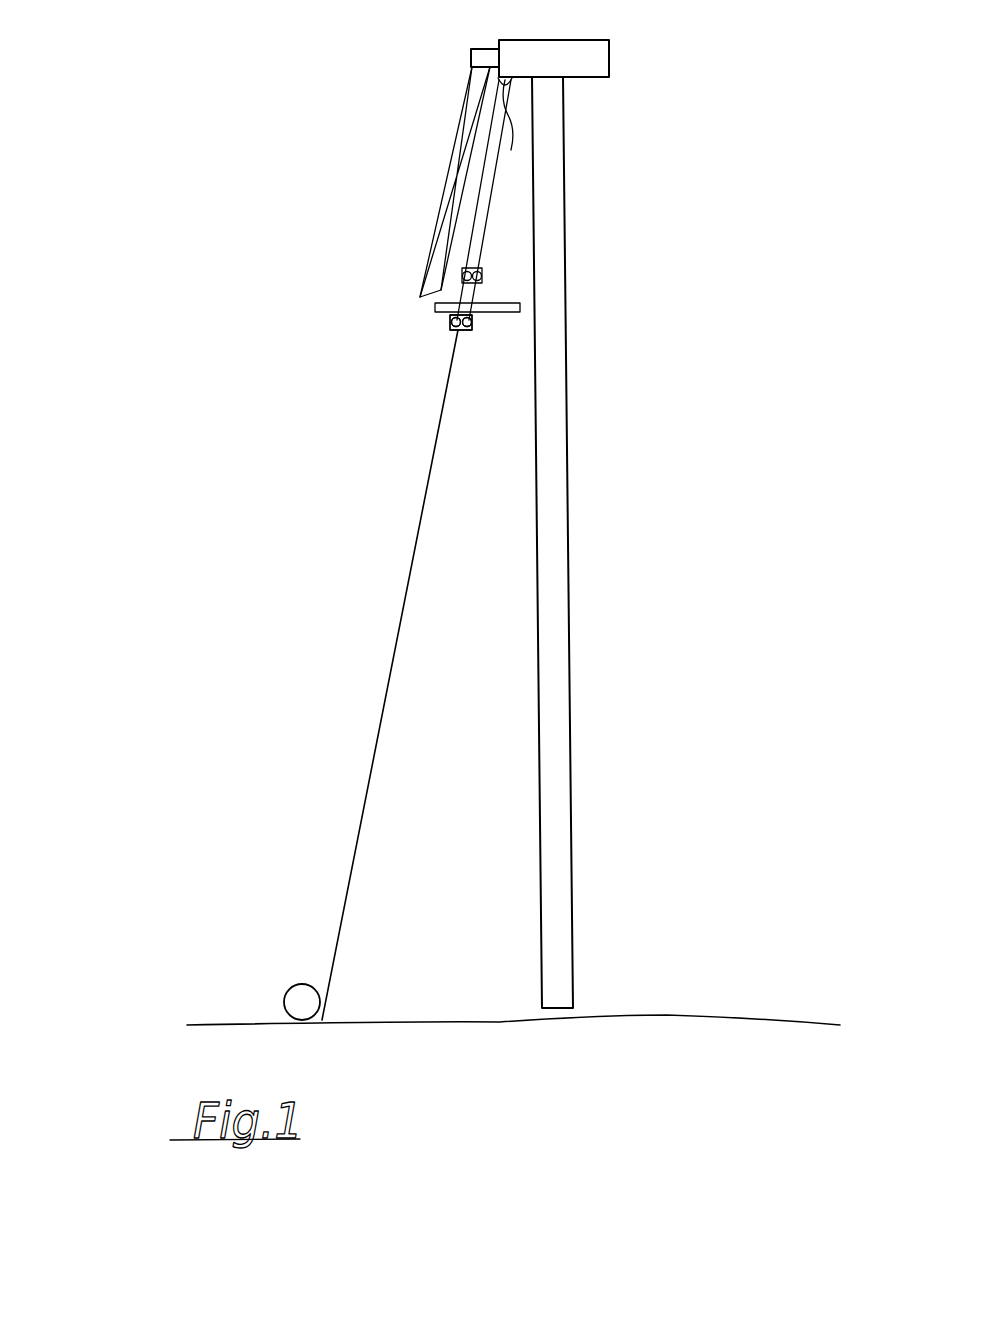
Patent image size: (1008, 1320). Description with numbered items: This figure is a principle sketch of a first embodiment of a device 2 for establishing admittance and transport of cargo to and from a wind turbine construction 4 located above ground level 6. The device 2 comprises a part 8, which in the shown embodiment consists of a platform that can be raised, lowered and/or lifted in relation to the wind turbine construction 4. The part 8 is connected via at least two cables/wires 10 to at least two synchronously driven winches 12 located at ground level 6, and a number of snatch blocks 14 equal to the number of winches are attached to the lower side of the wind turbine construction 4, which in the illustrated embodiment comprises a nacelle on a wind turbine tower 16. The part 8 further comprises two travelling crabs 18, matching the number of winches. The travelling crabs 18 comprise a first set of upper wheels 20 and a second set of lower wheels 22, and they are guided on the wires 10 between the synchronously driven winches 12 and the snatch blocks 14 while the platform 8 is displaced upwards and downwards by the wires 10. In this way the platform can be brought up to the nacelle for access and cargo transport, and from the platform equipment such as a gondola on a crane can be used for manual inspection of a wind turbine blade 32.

The device 2 is at (262, 589).
The wind turbine construction 4 is at (603, 48).
The ground level 6 is at (701, 996).
The part 8 is at (452, 313).
The cables/wires 10 is at (390, 667).
The synchronously driven winches 12 is at (292, 992).
The snatch blocks 14 is at (487, 199).
The wind turbine tower 16 is at (548, 502).
The travelling crabs 18 is at (461, 322).
The first set of upper wheels 20 is at (482, 270).
The second set of lower wheels 22 is at (466, 332).
The wind turbine blade 32 is at (450, 214).